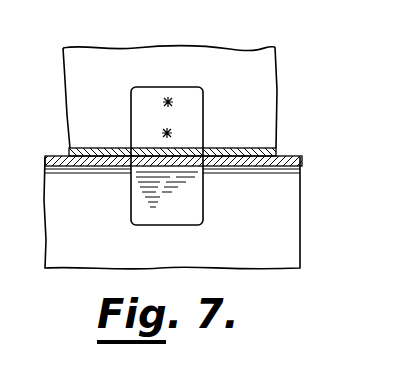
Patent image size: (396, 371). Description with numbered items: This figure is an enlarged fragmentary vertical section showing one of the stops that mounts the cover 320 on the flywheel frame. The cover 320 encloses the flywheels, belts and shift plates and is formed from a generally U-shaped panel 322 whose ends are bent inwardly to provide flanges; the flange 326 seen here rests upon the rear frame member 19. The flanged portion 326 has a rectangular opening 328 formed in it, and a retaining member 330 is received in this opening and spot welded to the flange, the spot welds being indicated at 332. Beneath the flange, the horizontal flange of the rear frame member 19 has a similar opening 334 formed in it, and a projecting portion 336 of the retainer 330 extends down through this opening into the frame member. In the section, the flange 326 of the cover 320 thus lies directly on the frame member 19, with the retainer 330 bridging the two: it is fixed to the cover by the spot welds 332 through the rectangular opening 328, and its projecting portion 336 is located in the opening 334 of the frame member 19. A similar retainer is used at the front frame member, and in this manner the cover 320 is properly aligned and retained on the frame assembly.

The rear frame member 19 is at (290, 200).
The cover 320 is at (103, 46).
The U-shaped panel 322 is at (153, 49).
The flange 326 is at (238, 148).
The rectangular opening 328 is at (212, 145).
The retaining member 330 is at (130, 110).
The spot welds 332 is at (168, 127).
The opening 334 is at (118, 174).
The projecting portion 336 is at (141, 227).